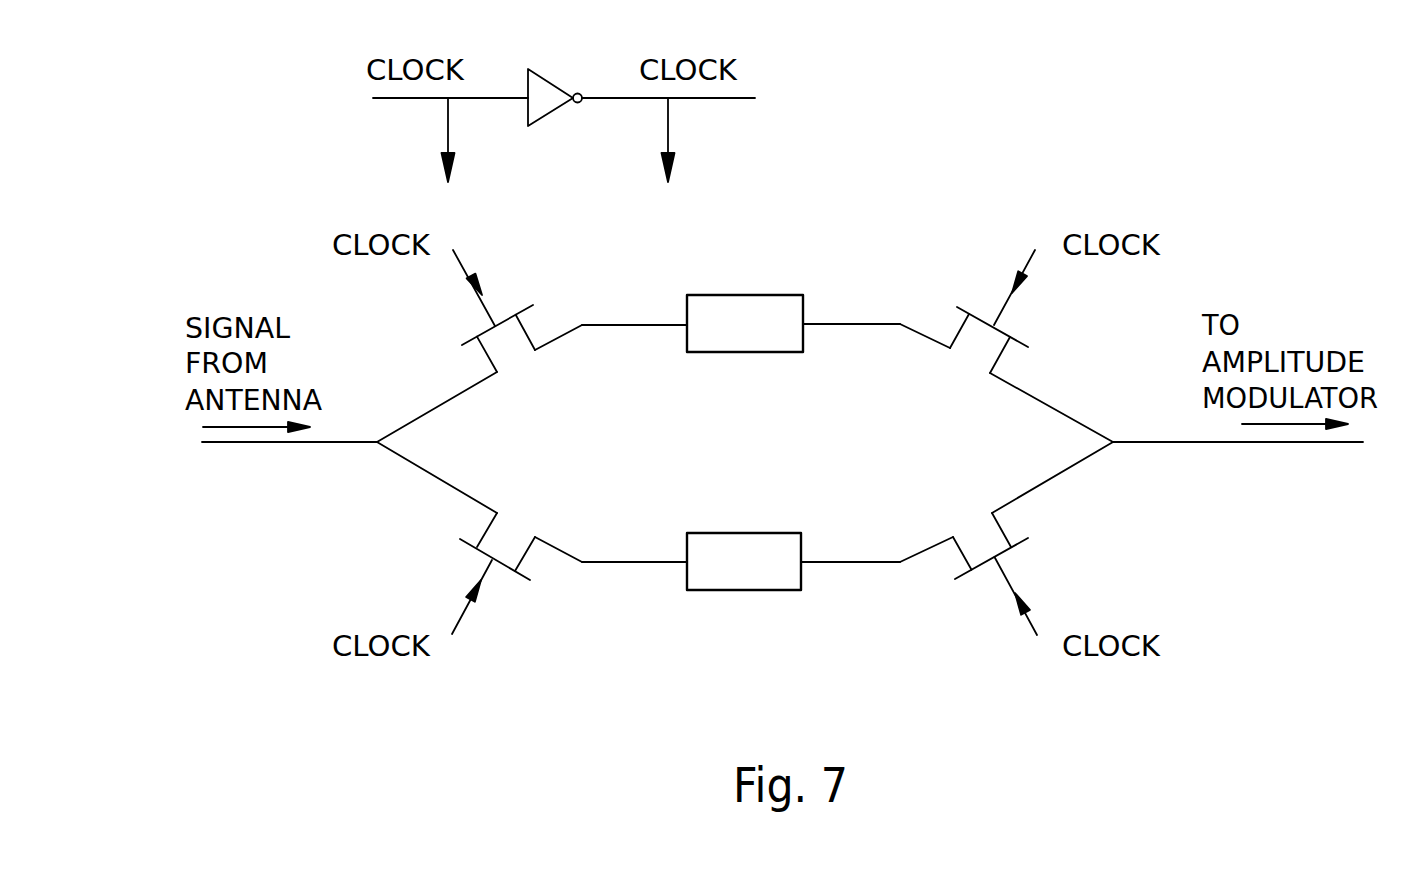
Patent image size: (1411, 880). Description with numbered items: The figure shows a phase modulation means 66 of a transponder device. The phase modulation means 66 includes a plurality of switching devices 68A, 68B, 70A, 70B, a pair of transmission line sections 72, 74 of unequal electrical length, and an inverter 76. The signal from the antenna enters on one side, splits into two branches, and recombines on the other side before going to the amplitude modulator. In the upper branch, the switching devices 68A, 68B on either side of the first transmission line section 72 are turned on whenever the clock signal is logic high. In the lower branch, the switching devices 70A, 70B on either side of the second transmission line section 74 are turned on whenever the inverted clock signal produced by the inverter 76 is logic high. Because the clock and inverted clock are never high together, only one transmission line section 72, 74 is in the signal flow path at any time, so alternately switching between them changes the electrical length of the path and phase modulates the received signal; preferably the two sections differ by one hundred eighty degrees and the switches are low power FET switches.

The phase modulation means 66 is at (1001, 202).
The switching device 68A is at (507, 317).
The switching device 68B is at (979, 319).
The switching device 70A is at (507, 566).
The switching device 70B is at (981, 567).
The first transmission line section 72 is at (787, 296).
The second transmission line section 74 is at (345, 442).
The inverter 76 is at (543, 73).